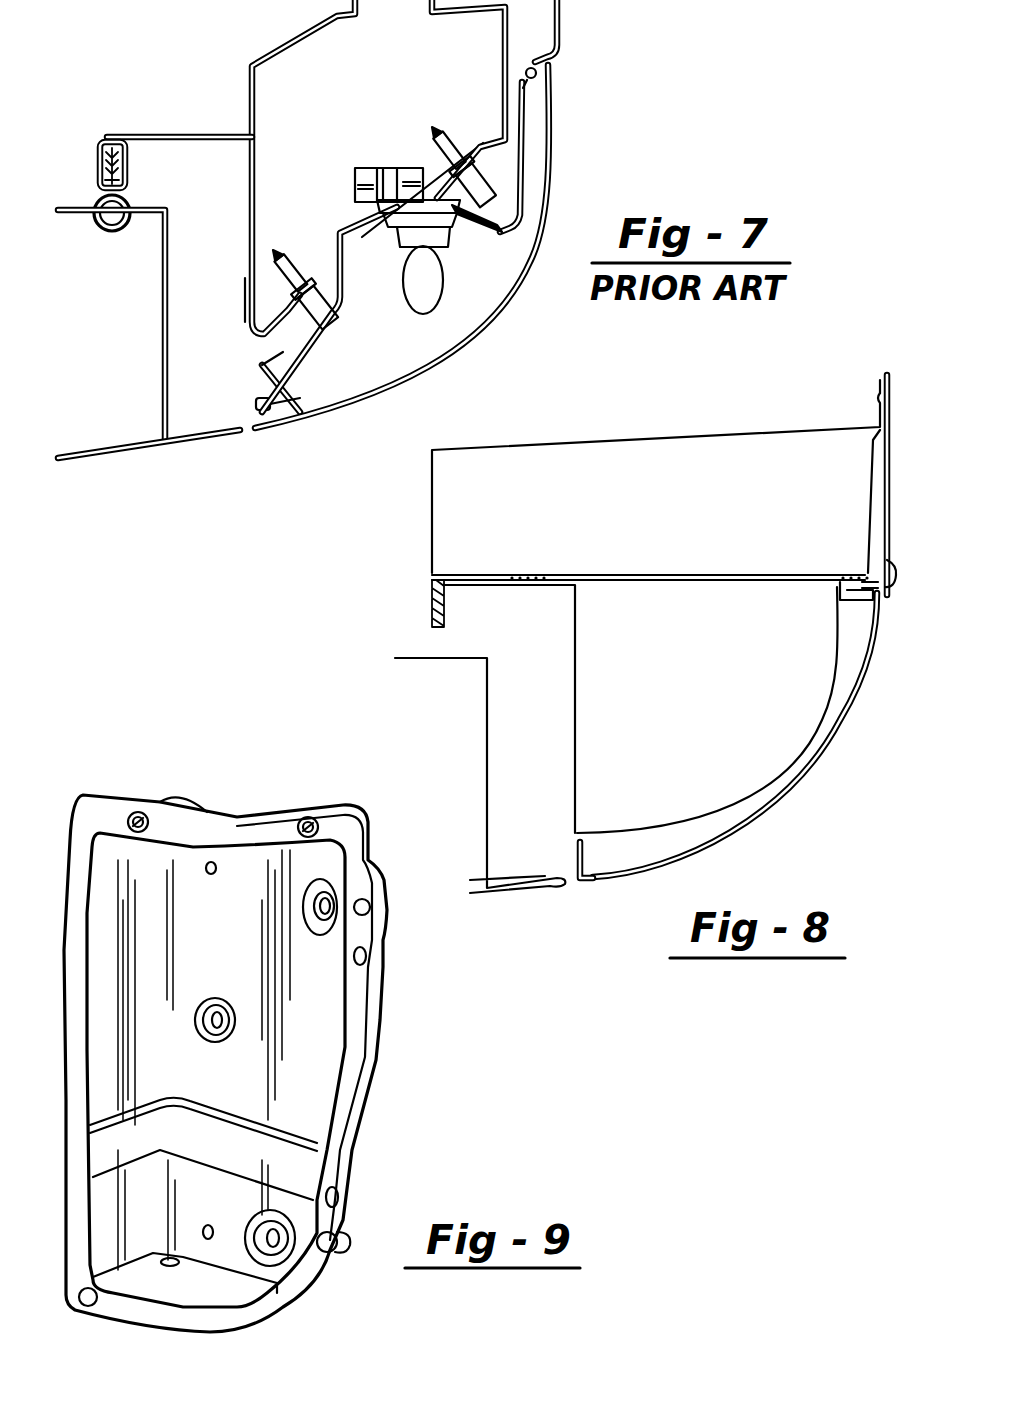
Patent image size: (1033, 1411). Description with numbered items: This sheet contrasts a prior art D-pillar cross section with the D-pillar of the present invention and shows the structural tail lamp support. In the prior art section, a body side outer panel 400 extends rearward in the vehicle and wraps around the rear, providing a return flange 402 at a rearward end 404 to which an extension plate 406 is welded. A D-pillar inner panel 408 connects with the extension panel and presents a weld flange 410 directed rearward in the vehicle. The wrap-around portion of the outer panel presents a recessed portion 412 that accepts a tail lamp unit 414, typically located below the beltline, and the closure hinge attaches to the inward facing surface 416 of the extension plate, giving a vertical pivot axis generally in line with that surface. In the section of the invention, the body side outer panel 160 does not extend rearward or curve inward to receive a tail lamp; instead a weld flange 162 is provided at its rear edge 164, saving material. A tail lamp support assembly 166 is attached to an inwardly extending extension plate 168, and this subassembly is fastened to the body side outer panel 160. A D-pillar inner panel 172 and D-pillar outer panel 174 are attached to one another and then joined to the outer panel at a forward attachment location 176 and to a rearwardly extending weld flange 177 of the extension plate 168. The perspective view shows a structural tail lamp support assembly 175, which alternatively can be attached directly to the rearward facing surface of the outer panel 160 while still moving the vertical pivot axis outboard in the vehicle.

In FIG. 7, the body side outer panel 400 is at (550, 45).
In FIG. 7, the return flange 402 is at (243, 278).
In FIG. 7, the rearward end 404 is at (265, 332).
In FIG. 7, the extension plate 406 is at (220, 140).
In FIG. 7, the D-pillar inner panel 408 is at (250, 100).
In FIG. 7, the weld flange 410 is at (123, 163).
In FIG. 7, the recessed portion 412 is at (355, 253).
In FIG. 7, the tail lamp unit 414 is at (526, 309).
In FIG. 7, the inward facing surface 416 is at (250, 245).
In FIG. 8, the body side outer panel 160 is at (890, 476).
In FIG. 8, the weld flange 162 is at (852, 598).
In FIG. 8, the rear edge 164 is at (878, 573).
In FIG. 8, the tail lamp support assembly 166 is at (748, 793).
In FIG. 8, the extension plate 168 is at (702, 582).
In FIG. 8, the D-pillar inner panel 172 is at (717, 428).
In FIG. 8, the D-pillar outer panel 174 is at (713, 573).
In FIG. 9, the structural tail lamp support assembly 175 is at (387, 858).
In FIG. 8, the forward attachment location 176 is at (878, 395).
In FIG. 8, the rearwardly extending weld flange 177 is at (447, 590).